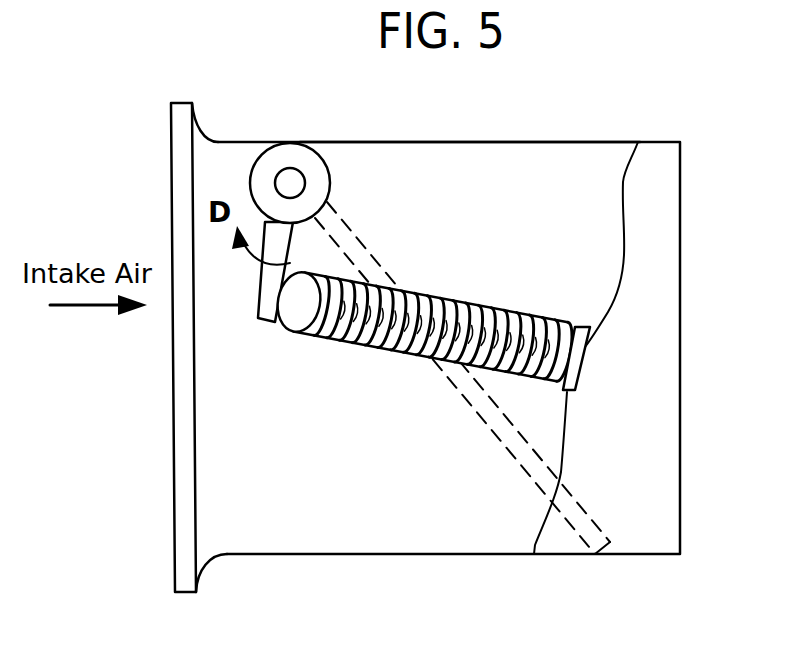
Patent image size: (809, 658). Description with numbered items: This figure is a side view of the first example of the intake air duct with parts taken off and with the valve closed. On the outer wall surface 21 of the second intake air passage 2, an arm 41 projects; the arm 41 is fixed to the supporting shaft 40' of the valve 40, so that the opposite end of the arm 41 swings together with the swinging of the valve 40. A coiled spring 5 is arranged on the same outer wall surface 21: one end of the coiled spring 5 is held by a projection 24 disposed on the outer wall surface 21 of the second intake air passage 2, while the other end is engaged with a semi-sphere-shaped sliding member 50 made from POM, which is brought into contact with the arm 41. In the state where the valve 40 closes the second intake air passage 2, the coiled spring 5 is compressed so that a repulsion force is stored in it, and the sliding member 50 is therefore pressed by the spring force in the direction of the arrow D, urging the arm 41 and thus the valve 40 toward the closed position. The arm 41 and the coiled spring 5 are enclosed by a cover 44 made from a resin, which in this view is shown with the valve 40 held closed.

The intake duct 2 is at (673, 251).
The duct top wall 21 is at (447, 160).
The duct inner wall 24 is at (587, 343).
The bellows / corrugated tube 5 is at (409, 328).
The end cap of bellows 50 is at (297, 312).
The rod (retracted position) 40 is at (462, 378).
The pivot shaft 40' is at (313, 161).
The arm 41 is at (263, 283).
The end plate 44 is at (633, 542).